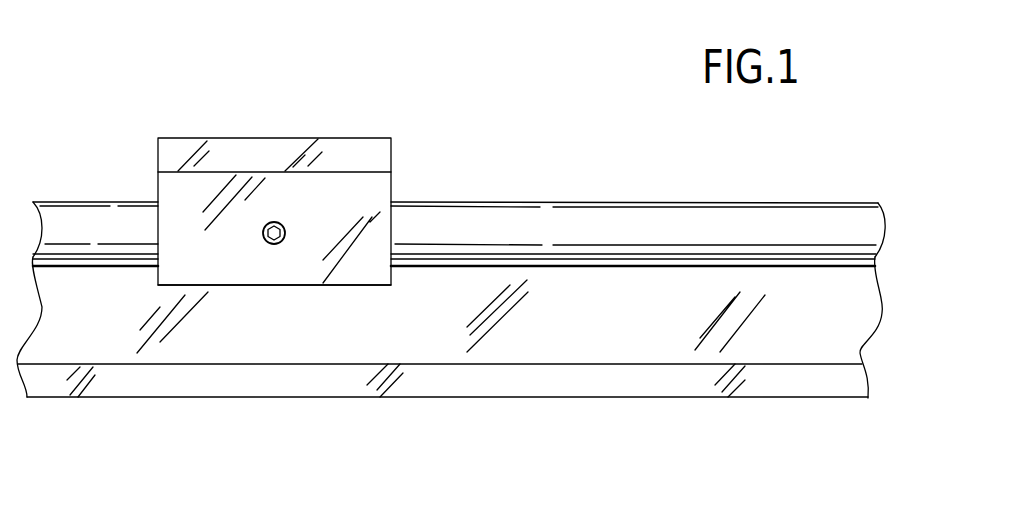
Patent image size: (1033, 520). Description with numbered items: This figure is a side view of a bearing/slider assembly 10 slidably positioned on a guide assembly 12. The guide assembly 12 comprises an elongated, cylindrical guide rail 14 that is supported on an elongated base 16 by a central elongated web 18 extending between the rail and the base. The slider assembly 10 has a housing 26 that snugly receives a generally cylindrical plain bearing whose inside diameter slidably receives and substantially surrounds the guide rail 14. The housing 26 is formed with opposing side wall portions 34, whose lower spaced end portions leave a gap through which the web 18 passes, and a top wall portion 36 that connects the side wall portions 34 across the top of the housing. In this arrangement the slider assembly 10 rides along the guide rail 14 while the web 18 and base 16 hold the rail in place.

The bearing/slider assembly 10 is at (363, 108).
The guide assembly 12 is at (875, 337).
The guide rail 14 is at (528, 202).
The base 16 is at (818, 398).
The web 18 is at (108, 329).
The housing 26 is at (157, 180).
The side wall portions 34 is at (345, 222).
The top wall portion 36 is at (240, 138).